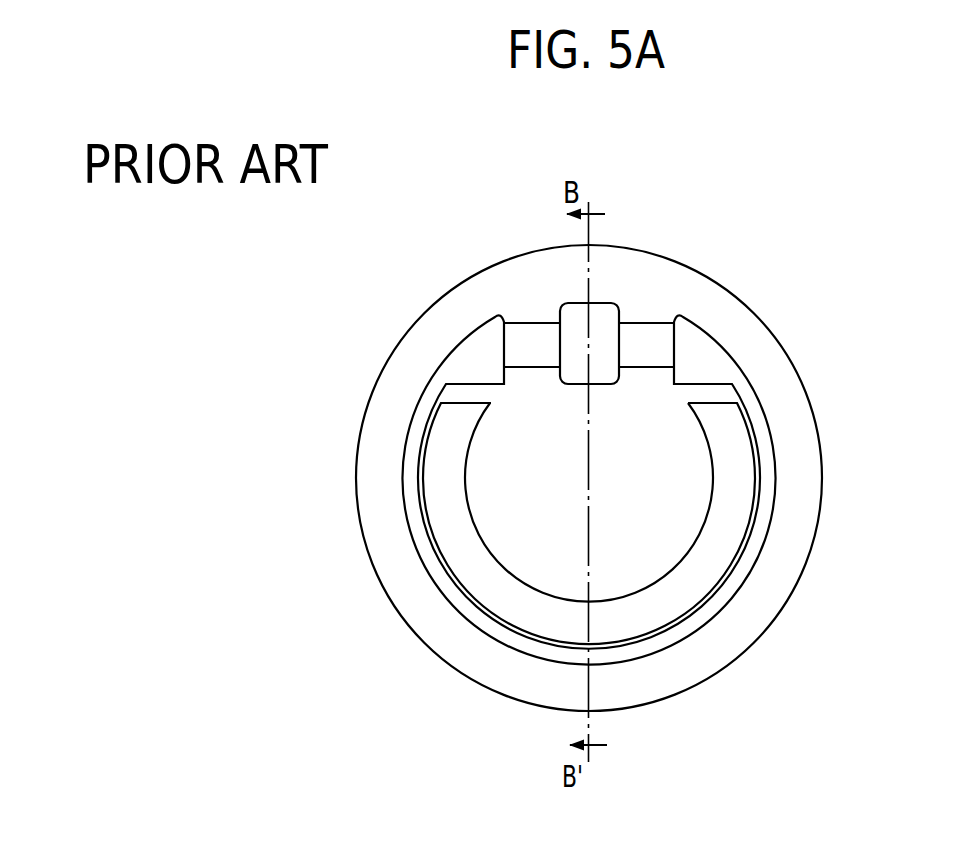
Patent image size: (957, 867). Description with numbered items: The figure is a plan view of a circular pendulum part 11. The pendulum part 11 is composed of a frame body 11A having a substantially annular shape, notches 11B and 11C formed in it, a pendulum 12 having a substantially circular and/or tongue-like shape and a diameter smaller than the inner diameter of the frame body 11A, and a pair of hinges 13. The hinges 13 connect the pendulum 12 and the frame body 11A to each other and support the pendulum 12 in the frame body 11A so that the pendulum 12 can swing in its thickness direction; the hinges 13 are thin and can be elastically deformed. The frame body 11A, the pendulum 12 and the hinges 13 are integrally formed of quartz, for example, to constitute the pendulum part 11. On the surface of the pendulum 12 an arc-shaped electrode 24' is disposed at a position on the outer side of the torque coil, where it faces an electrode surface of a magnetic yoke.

The circular pendulum part 11 is at (643, 455).
The frame body 11A is at (730, 321).
The notch 11B is at (700, 361).
The notch 11C is at (597, 365).
The pendulum 12 is at (690, 508).
The hinges 13 is at (532, 330).
The arc-shaped electrode 24' is at (566, 563).